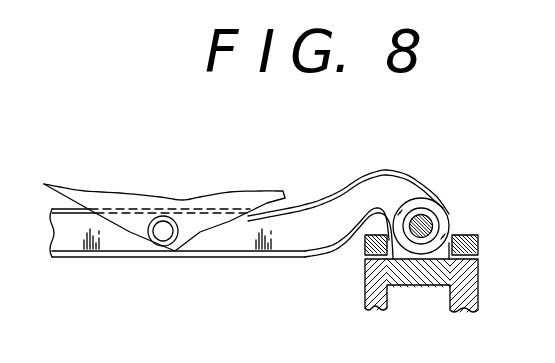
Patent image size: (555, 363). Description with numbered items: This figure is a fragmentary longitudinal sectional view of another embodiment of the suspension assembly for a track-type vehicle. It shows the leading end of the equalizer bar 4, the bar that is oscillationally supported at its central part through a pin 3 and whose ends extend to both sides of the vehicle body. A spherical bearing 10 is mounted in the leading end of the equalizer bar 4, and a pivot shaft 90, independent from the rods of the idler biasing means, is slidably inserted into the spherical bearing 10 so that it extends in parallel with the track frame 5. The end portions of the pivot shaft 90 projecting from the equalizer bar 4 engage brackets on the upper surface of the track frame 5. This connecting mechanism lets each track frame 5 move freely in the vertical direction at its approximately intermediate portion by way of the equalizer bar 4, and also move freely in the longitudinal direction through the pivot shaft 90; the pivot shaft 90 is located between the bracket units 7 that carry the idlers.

The pin 3 is at (171, 239).
The equalizer bar 4 is at (324, 207).
The track frame 5 is at (479, 282).
The bracket unit 7 is at (480, 236).
The spherical bearing 10 is at (422, 213).
The pivot shaft 90 is at (445, 219).